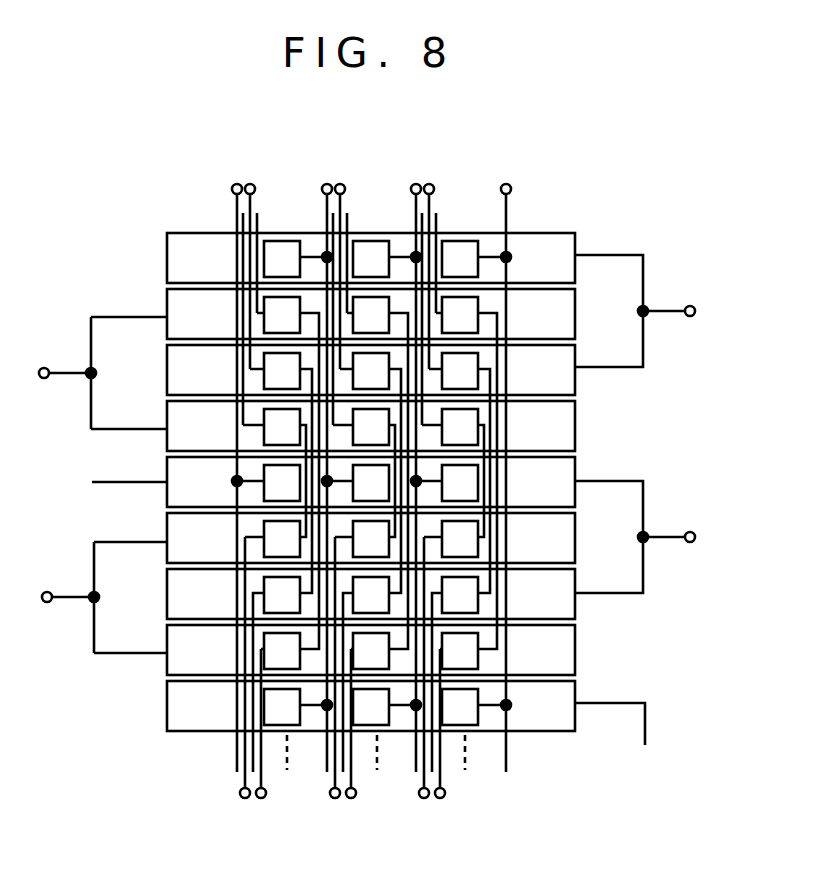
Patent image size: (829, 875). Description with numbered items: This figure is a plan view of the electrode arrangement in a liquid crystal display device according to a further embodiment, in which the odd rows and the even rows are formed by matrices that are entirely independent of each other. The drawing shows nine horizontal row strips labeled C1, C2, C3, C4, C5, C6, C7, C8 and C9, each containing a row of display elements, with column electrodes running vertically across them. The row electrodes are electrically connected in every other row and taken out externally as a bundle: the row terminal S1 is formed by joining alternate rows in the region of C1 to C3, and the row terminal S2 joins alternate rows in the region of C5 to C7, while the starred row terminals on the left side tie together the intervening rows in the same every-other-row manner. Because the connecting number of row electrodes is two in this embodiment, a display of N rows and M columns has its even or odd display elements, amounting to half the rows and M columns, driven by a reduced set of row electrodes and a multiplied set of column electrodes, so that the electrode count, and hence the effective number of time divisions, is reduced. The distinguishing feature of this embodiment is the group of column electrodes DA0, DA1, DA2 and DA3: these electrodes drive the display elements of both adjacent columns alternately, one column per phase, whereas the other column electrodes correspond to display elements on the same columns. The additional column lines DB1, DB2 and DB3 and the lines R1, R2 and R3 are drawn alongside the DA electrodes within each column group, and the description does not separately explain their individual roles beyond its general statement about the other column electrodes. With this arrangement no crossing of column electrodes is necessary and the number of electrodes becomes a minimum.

The cell row 1 C1 is at (387, 259).
The cell row 2 C2 is at (387, 469).
The cell row 3 C3 is at (387, 469).
The cell row 4 C4 is at (387, 469).
The cell row 5 C5 is at (387, 483).
The cell row 6 C6 is at (387, 539).
The cell row 7 C7 is at (387, 670).
The cell row 8 C8 is at (387, 651).
The cell row 9 C9 is at (406, 713).
The column electrode DA0 is at (230, 185).
The column electrode DA1 is at (322, 187).
The column electrode DA2 is at (417, 184).
The column electrode DA3 is at (511, 187).
The data line B1 DB1 is at (250, 184).
The data line B2 DB2 is at (340, 184).
The data line B3 DB3 is at (434, 185).
The row line pair 1 R1 is at (265, 307).
The row line pair 2 R2 is at (356, 307).
The row line pair 3 R3 is at (444, 306).
The row electrode S1 is at (651, 311).
The row electrode S2 is at (651, 537).